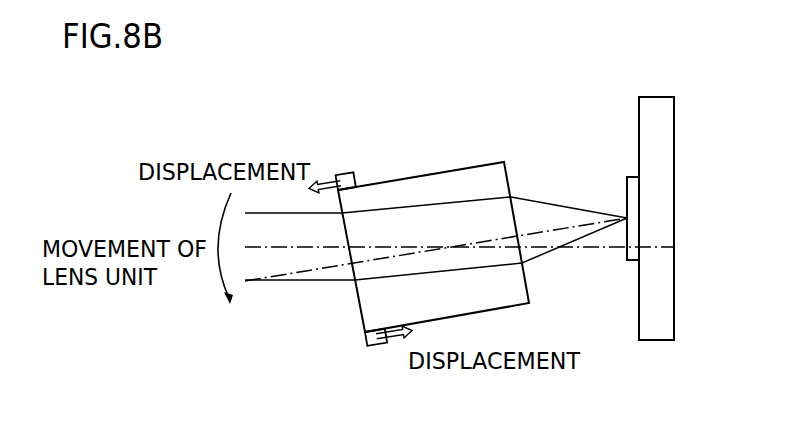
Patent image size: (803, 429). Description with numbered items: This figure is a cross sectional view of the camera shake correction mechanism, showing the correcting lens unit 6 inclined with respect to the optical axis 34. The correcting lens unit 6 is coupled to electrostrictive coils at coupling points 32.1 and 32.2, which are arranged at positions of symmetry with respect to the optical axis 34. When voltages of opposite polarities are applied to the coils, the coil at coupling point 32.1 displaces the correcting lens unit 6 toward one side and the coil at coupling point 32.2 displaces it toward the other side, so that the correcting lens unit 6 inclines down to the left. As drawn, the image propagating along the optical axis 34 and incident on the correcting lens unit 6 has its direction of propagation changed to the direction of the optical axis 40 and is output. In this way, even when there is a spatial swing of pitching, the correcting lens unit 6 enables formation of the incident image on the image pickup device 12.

The correcting lens unit 6 is at (519, 295).
The image pickup device 12 is at (656, 112).
The optical axis 34 is at (594, 249).
The optical axis 40 is at (317, 269).
The coupling point 32.1 is at (347, 173).
The coupling point 32.2 is at (372, 348).